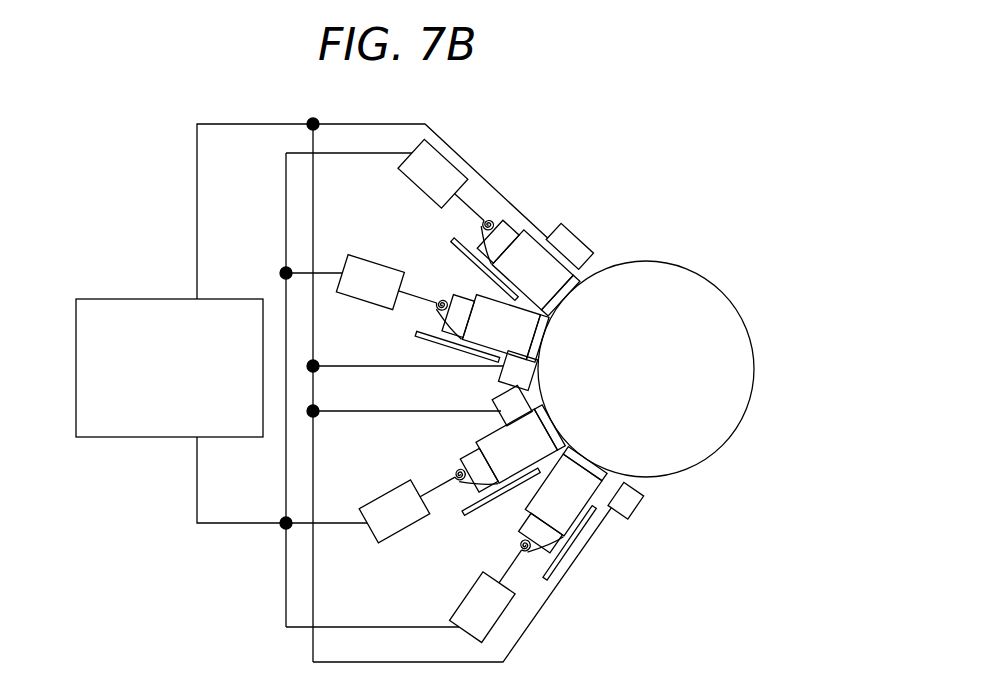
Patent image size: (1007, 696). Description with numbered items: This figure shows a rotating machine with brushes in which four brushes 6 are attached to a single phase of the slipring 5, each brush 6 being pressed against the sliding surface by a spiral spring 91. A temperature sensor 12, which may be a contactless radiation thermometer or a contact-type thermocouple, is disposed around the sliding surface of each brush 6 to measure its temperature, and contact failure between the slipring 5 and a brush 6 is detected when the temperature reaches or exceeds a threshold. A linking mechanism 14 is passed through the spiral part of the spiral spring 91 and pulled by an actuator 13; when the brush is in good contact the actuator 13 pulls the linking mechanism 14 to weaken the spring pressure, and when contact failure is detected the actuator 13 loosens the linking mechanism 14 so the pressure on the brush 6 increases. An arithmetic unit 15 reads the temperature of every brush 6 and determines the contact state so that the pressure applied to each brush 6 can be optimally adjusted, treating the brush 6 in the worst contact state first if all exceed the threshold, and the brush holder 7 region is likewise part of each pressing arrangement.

The slipring 5 is at (722, 327).
The brush 6 is at (524, 224).
The developing device 7 is at (548, 240).
The temperature sensor 12 is at (573, 243).
The actuator 13 is at (445, 172).
The linking mechanism 14 is at (481, 196).
The arithmetic unit 15 is at (115, 310).
The spiral spring 91 is at (503, 220).